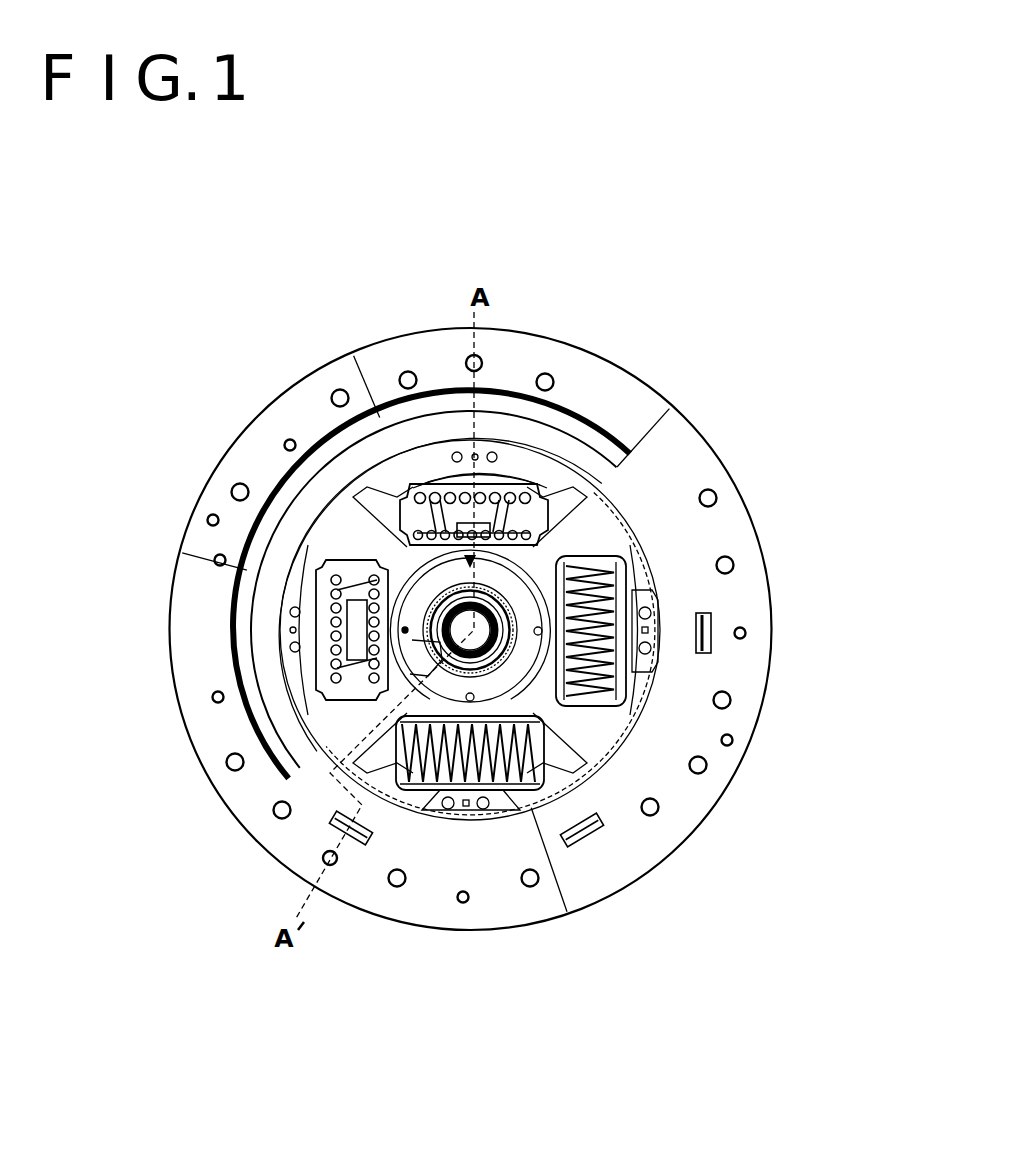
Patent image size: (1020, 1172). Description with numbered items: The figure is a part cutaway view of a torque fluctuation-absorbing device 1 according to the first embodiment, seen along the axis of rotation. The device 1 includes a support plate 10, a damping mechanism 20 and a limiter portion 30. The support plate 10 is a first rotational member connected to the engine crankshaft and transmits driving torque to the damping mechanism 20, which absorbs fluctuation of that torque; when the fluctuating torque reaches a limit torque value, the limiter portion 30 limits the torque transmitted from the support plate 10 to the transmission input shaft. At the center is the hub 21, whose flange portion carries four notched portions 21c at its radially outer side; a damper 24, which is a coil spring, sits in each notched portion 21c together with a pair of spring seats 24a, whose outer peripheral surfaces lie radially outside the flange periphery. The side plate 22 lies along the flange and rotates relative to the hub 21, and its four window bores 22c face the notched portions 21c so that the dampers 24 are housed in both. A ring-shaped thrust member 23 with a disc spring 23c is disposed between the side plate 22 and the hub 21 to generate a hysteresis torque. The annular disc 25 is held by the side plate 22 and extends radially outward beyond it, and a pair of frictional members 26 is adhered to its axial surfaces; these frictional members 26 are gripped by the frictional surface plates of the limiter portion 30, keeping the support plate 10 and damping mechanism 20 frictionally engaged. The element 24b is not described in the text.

The torque fluctuation-absorbing device 1 is at (912, 347).
The support plate 10 is at (607, 372).
The damping mechanism 20 is at (325, 708).
The hub 21 is at (505, 668).
The notched portion 21c is at (495, 480).
The side plate 22 is at (620, 556).
The window bore 22c is at (567, 912).
The thrust member 23 is at (440, 587).
The disc spring 23c is at (642, 482).
The damper 24 is at (452, 485).
The spring seat 24a is at (332, 582).
The second torsion spring 24b is at (291, 777).
The disc 25 is at (283, 660).
The frictional member 26 is at (258, 637).
The limiter portion 30 is at (758, 683).